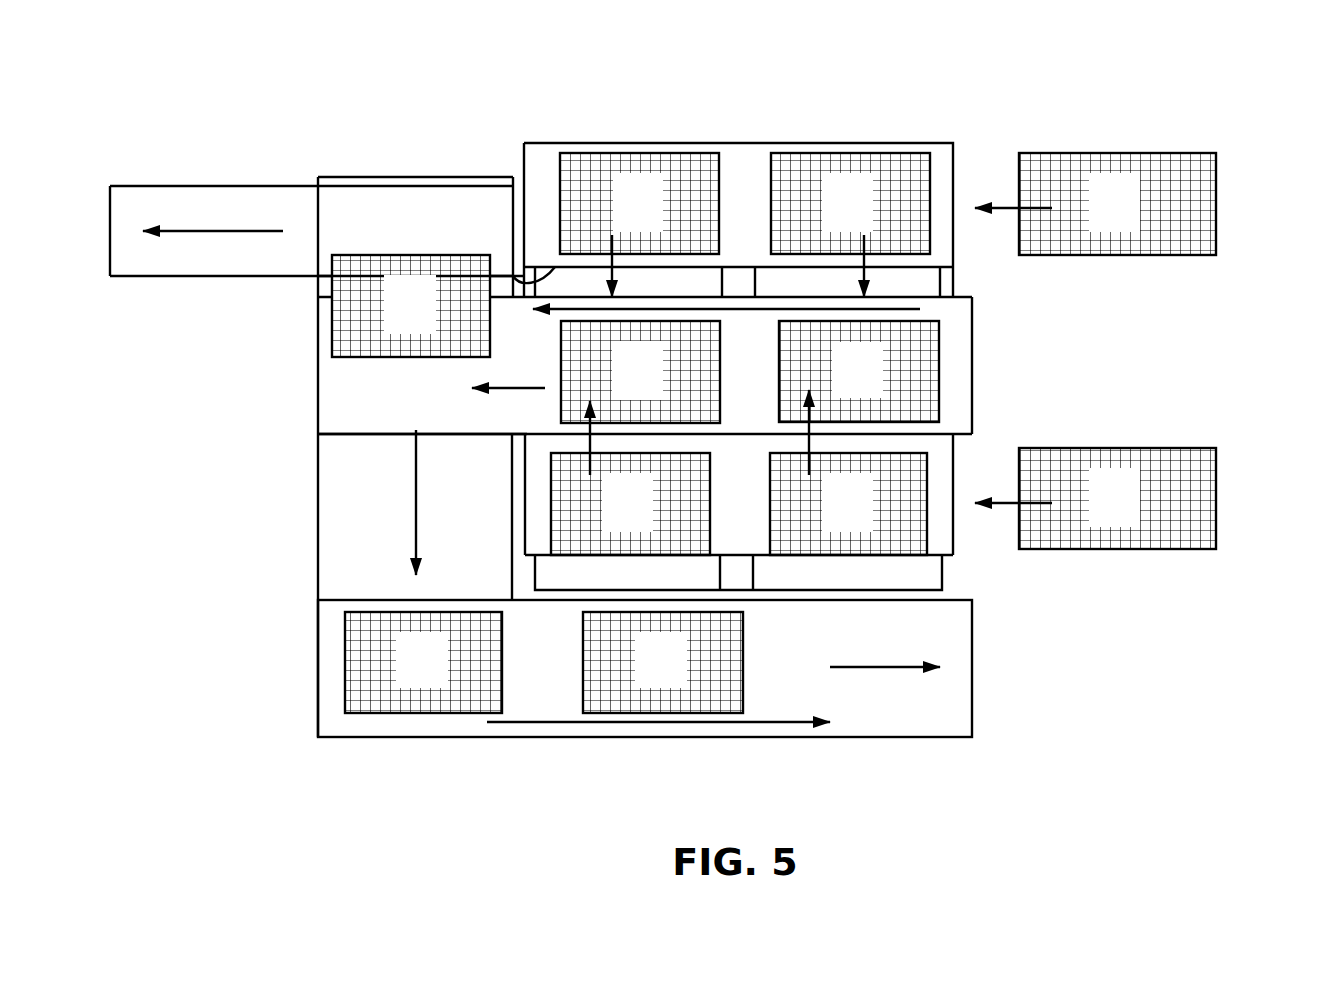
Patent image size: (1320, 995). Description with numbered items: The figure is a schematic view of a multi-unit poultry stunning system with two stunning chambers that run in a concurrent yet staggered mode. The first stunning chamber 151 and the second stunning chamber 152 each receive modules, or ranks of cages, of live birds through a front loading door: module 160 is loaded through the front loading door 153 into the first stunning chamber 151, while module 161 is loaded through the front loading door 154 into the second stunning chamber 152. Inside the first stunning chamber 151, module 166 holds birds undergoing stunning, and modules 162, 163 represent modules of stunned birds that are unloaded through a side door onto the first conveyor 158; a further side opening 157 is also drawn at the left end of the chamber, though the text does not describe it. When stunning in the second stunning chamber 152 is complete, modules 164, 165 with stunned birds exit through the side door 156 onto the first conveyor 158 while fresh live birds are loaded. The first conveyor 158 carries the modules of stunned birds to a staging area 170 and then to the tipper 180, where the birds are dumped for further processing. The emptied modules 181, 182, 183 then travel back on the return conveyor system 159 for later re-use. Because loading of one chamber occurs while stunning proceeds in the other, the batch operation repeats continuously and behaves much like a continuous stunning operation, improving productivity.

The first stunning chamber 151 is at (935, 285).
The second stunning chamber 152 is at (943, 450).
The front loading door 153 is at (957, 160).
The front loading door 154 is at (957, 540).
The side door 156 is at (527, 434).
The inlet port 157 is at (513, 276).
The first conveyor 158 is at (962, 362).
The return conveyor system 159 is at (972, 680).
The module 160 is at (1222, 190).
The module 161 is at (1222, 497).
The module 162 is at (584, 335).
The module 163 is at (910, 345).
The module 164 is at (565, 545).
The module 165 is at (853, 545).
The module 166 is at (650, 160).
The staging area 170 is at (395, 385).
The tipper 180 is at (405, 210).
The empty module 181 is at (348, 312).
The empty module 182 is at (378, 705).
The empty module 183 is at (633, 705).